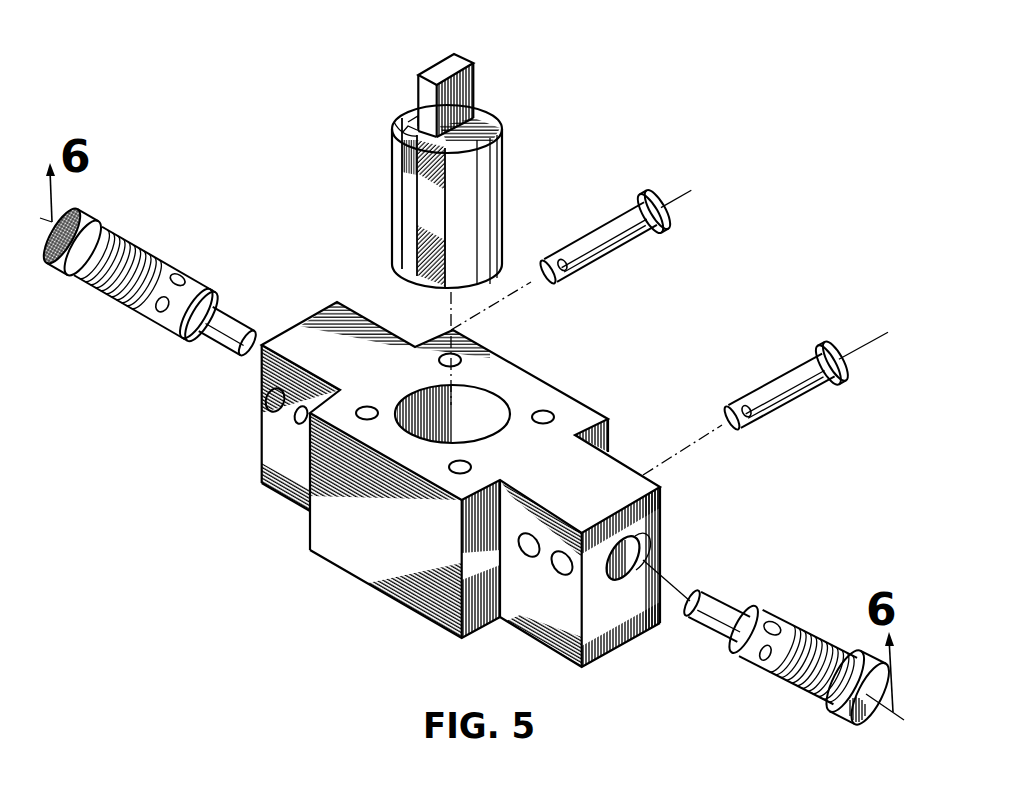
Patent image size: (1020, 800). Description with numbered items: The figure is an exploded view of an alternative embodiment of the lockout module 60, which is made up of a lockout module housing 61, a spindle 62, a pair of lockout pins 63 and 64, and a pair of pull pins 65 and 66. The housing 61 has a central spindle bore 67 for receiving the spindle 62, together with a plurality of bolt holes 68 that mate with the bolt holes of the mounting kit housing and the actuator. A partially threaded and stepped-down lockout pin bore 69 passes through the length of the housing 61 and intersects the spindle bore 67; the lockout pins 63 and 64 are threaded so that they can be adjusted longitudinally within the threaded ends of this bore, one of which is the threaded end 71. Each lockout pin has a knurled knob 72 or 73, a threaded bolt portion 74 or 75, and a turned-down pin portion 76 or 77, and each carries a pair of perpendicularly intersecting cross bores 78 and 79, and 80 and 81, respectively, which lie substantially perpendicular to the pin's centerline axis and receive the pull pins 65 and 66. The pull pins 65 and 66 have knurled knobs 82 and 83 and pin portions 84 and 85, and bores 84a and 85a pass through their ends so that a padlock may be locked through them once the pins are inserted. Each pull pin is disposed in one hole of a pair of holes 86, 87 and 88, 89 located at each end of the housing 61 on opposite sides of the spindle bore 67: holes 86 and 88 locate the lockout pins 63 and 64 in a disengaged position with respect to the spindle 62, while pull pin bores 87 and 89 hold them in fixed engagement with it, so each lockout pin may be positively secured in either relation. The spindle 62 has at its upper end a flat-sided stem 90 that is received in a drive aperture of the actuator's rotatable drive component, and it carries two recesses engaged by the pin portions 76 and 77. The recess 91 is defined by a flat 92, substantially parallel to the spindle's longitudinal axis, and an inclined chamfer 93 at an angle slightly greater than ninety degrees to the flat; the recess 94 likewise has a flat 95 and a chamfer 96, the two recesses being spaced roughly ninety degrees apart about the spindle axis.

The lockout module 60 is at (602, 380).
The lockout module housing 61 is at (528, 376).
The spindle 62 is at (504, 168).
The lockout pin 63 is at (138, 212).
The lockout pin 64 is at (803, 721).
The pull pin 65 is at (631, 188).
The pull pin 66 is at (813, 330).
The spindle bore 67 is at (488, 420).
The bolt holes 68 is at (408, 376).
The lockout pin bore 69 is at (645, 538).
The threaded end of bore 71 is at (643, 560).
The knurled knob 72 is at (70, 276).
The knurled knob 73 is at (853, 730).
The threaded bolt portion 74 is at (138, 256).
The threaded bolt portion 75 is at (836, 657).
The turned-down pin portion 76 is at (230, 314).
The turned-down pin portion 77 is at (732, 604).
The cross bore 78 is at (160, 313).
The cross bore 79 is at (184, 270).
The cross bore 80 is at (757, 668).
The cross bore 81 is at (780, 622).
The knurled knob 82 is at (680, 216).
The knurled knob 83 is at (845, 350).
The pin portion 84 is at (623, 252).
The bore 84a is at (580, 278).
The pin portion 85 is at (807, 400).
The bore 85a is at (752, 418).
The pull pin hole 86 is at (266, 403).
The pull pin bore 87 is at (310, 422).
The pull pin hole 88 is at (561, 580).
The pull pin bore 89 is at (527, 557).
The flat-sided stem 90 is at (474, 70).
The recess 91 is at (418, 285).
The flat 92 is at (440, 212).
The chamfer 93 is at (410, 213).
The recess 94 is at (402, 106).
The flat 95 is at (415, 110).
The chamfer 96 is at (398, 129).